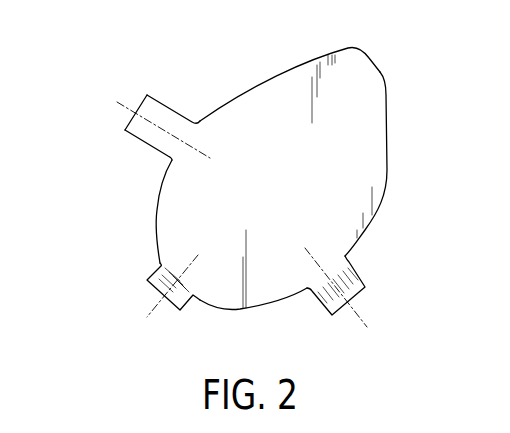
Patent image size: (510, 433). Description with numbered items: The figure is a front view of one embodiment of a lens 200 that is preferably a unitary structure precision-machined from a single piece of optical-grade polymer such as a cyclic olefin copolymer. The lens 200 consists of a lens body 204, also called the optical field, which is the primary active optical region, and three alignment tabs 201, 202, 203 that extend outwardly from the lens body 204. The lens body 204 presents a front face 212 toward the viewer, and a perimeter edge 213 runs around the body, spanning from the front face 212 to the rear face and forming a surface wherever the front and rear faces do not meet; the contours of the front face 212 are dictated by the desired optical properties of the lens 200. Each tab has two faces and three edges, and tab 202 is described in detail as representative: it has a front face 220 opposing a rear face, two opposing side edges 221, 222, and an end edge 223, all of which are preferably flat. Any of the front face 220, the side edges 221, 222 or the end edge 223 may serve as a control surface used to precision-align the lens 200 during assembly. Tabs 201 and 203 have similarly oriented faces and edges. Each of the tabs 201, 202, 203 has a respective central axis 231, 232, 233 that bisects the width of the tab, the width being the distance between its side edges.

The lens 200 is at (152, 16).
The alignment tab 201 is at (353, 284).
The alignment tab 202 is at (153, 107).
The alignment tab 203 is at (157, 269).
The lens body 204 is at (268, 288).
The front face 212 is at (369, 121).
The perimeter edge 213 is at (288, 66).
The front face 220 is at (165, 146).
The side edge 221 is at (175, 110).
The side edge 222 is at (143, 147).
The end edge 223 is at (142, 103).
The central axis 231 is at (355, 316).
The central axis 232 is at (123, 106).
The central axis 233 is at (155, 304).